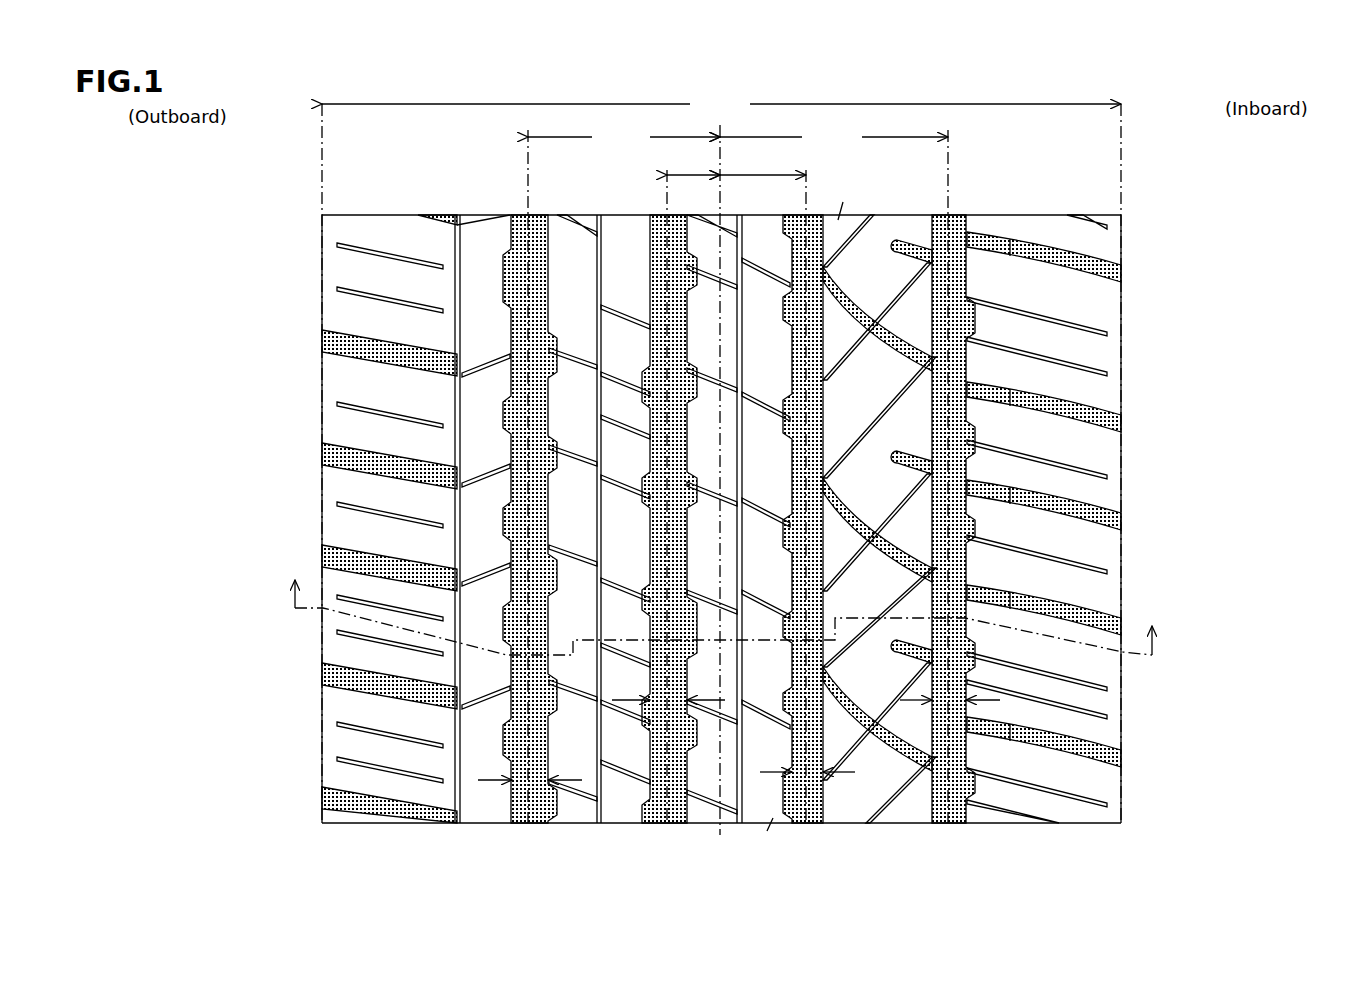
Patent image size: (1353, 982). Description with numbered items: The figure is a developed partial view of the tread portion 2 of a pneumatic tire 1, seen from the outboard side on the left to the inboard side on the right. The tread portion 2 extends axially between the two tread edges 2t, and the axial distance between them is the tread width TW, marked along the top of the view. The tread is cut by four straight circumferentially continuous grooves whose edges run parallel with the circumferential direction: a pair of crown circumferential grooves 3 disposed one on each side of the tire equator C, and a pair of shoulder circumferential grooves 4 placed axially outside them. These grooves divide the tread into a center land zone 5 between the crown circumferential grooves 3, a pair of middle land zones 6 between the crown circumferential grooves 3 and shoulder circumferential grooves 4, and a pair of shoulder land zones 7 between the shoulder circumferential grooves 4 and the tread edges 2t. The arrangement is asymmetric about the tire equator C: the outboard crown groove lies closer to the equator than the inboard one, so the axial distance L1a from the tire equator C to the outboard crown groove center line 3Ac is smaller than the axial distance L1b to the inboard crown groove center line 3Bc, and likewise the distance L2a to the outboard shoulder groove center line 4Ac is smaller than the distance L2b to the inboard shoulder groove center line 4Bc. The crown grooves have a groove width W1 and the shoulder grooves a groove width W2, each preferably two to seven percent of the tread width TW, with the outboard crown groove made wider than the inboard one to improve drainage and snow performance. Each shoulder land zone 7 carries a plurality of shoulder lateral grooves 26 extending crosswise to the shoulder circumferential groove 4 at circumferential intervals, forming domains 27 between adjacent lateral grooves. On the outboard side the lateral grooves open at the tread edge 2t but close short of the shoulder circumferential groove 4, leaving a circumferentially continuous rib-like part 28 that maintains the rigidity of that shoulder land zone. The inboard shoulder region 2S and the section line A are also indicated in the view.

The pneumatic tire 1 is at (1137, 187).
The tread portion 2 is at (1030, 210).
The tread edges 2t is at (320, 268).
The inboard shoulder region 2S is at (1070, 308).
The crown circumferential grooves 3 is at (660, 463).
The shoulder circumferential grooves 4 is at (513, 557).
The center land zone 5 is at (705, 542).
The middle land zones 6 is at (562, 738).
The shoulder land zones 7 is at (365, 777).
The shoulder lateral grooves 26 is at (405, 352).
The domains 27 is at (365, 652).
The rib-like part 28 is at (485, 243).
The groove center line of outboard shoulder circumferential groove 4Ac is at (527, 187).
The groove center line of outboard crown circumferential groove 3Ac is at (666, 192).
The groove center line of inboard crown circumferential groove 3Bc is at (838, 173).
The groove center line of inboard shoulder circumferential groove 4Bc is at (949, 187).
The tire equator C is at (723, 489).
The tread width TW is at (721, 105).
The axial distance between tire equator and outboard crown groove center line L1a is at (693, 161).
The axial distance between tire equator and inboard crown groove center line L1b is at (763, 161).
The axial distance between tire equator and outboard shoulder groove center line L2a is at (624, 140).
The axial distance between tire equator and inboard shoulder groove center line L2b is at (834, 139).
The groove width of crown circumferential groove W1 is at (672, 705).
The groove width of shoulder circumferential groove W2 is at (531, 780).
The section line A- A is at (723, 606).